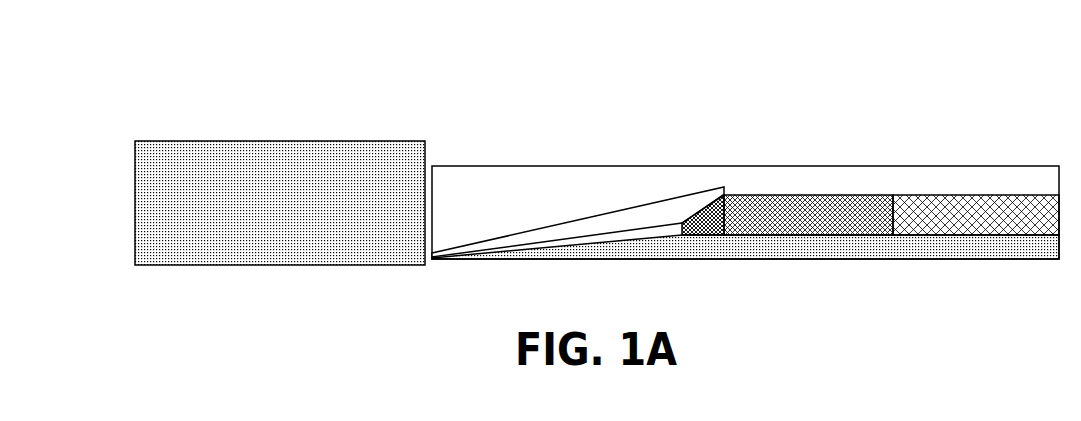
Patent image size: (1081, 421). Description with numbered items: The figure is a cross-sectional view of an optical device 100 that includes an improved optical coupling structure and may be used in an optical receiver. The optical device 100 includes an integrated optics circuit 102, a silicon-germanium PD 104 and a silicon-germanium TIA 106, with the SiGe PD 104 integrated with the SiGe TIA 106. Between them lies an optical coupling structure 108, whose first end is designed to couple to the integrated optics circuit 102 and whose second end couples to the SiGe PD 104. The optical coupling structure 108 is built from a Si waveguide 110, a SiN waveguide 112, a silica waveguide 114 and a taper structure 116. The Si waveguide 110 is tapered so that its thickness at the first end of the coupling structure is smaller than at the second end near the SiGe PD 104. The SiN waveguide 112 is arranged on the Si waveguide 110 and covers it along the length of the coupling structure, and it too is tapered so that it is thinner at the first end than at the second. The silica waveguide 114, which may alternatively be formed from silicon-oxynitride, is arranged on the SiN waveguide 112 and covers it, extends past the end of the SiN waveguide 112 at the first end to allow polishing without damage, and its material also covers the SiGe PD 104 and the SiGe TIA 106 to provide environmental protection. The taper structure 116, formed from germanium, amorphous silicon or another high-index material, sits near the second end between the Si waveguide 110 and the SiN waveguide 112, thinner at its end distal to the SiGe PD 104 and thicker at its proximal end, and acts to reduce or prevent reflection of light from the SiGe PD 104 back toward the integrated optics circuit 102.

The optical device 100 is at (126, 85).
The integrated optics circuit 102 is at (260, 215).
The silicon-germanium PD 104 is at (787, 225).
The silicon-germanium TIA 106 is at (955, 225).
The optical coupling structure 108 is at (432, 87).
The silicon waveguide 110 is at (663, 247).
The silicon-nitride waveguide 112 is at (638, 217).
The silica waveguide 114 is at (489, 196).
The taper structure 116 is at (693, 223).